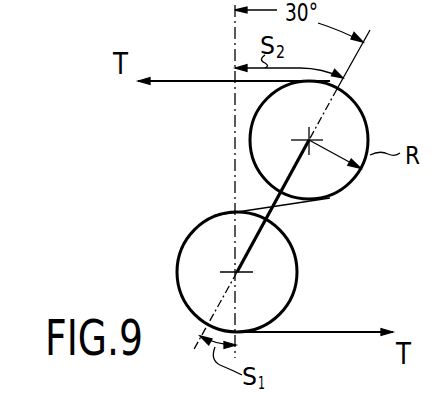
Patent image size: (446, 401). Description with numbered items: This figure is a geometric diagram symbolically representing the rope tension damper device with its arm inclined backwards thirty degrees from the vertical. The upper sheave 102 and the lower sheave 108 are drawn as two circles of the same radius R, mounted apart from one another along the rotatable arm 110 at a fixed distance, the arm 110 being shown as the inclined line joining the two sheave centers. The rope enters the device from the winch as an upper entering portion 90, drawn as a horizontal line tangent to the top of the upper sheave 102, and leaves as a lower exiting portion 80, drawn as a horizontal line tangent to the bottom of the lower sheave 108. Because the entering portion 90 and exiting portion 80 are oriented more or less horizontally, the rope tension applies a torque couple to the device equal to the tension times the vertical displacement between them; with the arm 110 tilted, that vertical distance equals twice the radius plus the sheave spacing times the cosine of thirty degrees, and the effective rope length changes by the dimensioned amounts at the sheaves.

The exiting portion 80 is at (330, 333).
The entering portion 90 is at (183, 80).
The upper sheave 102 is at (367, 110).
The lower sheave 108 is at (181, 250).
The arm 110 is at (272, 207).